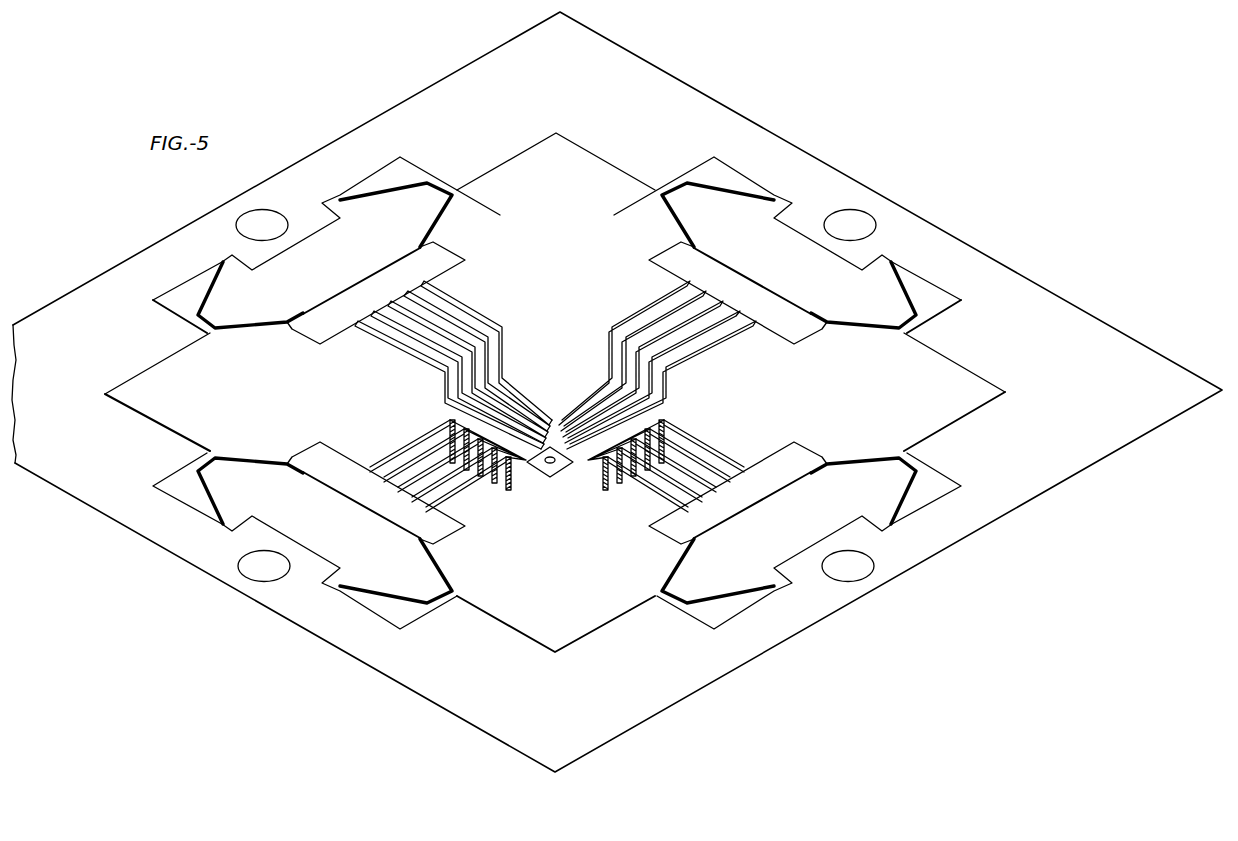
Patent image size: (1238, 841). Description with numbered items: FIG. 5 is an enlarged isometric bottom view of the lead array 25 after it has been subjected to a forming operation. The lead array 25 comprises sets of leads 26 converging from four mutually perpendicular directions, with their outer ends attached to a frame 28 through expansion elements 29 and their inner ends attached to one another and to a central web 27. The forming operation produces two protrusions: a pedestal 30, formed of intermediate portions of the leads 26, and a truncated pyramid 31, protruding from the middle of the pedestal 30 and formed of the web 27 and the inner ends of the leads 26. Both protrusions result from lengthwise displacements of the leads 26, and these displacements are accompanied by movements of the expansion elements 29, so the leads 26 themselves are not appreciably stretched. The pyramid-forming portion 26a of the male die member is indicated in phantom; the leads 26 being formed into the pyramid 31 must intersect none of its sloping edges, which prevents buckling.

The lead array 25 is at (770, 660).
The leads 26 is at (421, 366).
The pyramid-forming portion of the male die member 26a is at (552, 418).
The central web 27 is at (551, 474).
The frame 28 is at (994, 271).
The expansion elements 29 is at (907, 484).
The pedestal 30 is at (604, 408).
The truncated pyramid 31 is at (557, 416).